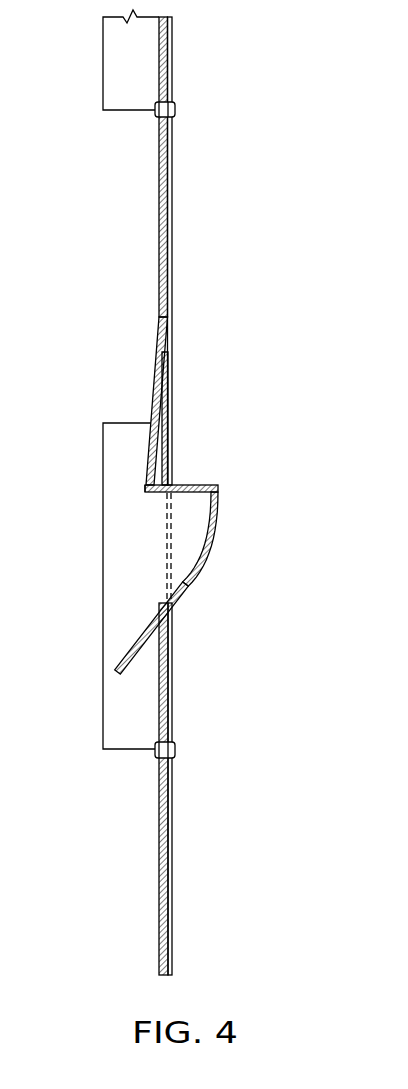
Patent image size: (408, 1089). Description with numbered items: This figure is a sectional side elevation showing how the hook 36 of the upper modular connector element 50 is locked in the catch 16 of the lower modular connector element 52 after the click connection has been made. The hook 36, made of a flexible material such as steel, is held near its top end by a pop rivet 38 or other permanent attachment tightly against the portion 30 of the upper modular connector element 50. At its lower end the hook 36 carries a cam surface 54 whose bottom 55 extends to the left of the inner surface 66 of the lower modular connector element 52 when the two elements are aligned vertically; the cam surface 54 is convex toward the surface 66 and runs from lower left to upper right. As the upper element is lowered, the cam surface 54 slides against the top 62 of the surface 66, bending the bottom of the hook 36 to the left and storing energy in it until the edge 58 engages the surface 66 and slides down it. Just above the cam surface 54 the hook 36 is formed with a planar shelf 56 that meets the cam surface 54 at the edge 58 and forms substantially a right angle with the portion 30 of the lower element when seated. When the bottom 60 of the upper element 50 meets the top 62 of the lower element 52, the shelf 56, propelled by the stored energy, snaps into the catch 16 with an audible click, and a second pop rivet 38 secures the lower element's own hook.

The catch 16 is at (167, 502).
The portion 30 is at (172, 176).
The hook 36 is at (145, 265).
The pop rivet 38 is at (175, 110).
The upper modular connector element 50 is at (210, 257).
The lower modular connector element 52 is at (210, 704).
The cam surface 54 is at (145, 645).
The bottom of the cam surface 55 is at (118, 672).
The planar shelf 56 is at (202, 485).
The edge 58 is at (220, 489).
The bottom of the upper modular connector element 60 is at (172, 410).
The top of the surface 62 is at (172, 428).
The inner surface 66 is at (148, 465).